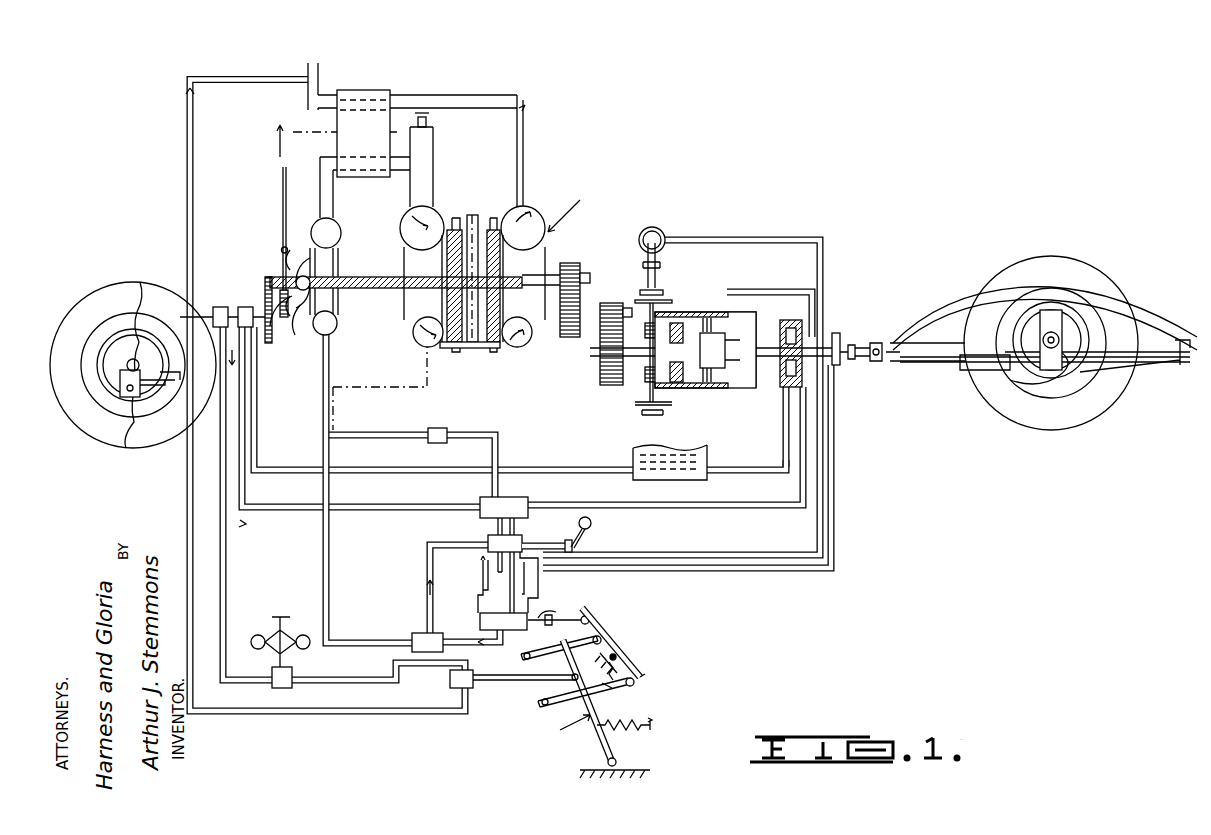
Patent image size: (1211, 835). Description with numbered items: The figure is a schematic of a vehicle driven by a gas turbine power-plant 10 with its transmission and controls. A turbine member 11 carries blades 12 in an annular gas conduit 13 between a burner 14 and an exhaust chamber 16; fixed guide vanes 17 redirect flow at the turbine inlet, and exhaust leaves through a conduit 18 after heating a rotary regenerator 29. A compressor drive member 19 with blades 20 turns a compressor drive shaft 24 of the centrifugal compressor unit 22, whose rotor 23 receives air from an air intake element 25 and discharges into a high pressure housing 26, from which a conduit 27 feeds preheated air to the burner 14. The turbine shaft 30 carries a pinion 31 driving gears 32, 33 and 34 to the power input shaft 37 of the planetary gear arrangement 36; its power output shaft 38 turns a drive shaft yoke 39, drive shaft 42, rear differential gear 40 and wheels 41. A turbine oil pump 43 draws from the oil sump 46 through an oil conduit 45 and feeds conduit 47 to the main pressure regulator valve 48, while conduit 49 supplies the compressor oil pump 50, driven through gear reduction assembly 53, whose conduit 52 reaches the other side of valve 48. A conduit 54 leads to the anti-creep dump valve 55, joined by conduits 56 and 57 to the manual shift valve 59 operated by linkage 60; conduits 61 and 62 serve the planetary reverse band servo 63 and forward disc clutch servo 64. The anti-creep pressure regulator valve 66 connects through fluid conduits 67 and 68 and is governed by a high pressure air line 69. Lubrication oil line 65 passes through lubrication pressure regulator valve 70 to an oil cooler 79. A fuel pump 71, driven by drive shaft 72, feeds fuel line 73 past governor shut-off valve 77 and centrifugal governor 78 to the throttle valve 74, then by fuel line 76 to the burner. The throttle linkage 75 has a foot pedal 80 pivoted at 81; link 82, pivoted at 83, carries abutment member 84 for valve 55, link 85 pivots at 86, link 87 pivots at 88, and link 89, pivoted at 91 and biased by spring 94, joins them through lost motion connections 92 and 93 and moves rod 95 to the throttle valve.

The gas turbine power-plant 10 is at (574, 208).
The turbine member 11 is at (470, 350).
The blades 12 is at (505, 348).
The annular gas conduit 13 is at (474, 214).
The burner 14 is at (410, 190).
The exhaust chamber 16 is at (530, 208).
The guide vanes 17 is at (454, 215).
The conduit 18 is at (320, 72).
The compressor drive member 19 is at (414, 326).
The blades 20 is at (432, 365).
The centrifugal compressor unit 22 is at (350, 314).
The rotor 23 is at (318, 278).
The compressor drive shaft 24 is at (370, 290).
The air intake element 25 is at (280, 262).
The high pressure housing 26 is at (341, 230).
The conduit 27 is at (320, 190).
The rotary regenerator 29 is at (372, 115).
The turbine shaft 30 is at (572, 262).
The pinion 31 is at (587, 272).
The gear 32 is at (645, 328).
The gear 33 is at (646, 300).
The gear 34 is at (611, 354).
The planetary gear arrangement 36 is at (716, 304).
The power input shaft 37 is at (627, 380).
The power output shaft 38 is at (760, 330).
The drive shaft yoke 39 is at (874, 342).
The rear differential gear 40 is at (1075, 330).
The wheels 41 is at (1085, 268).
The drive shaft 42 is at (905, 342).
The turbine oil pump 43 is at (806, 368).
The oil conduit 45 is at (780, 422).
The oil sump 46 is at (695, 482).
The conduit 47 is at (698, 510).
The main pressure regulator valve 48 is at (532, 500).
The conduit 49 is at (590, 454).
The compressor oil pump 50 is at (265, 285).
The conduit 52 is at (262, 518).
The gear reduction assembly 53 is at (266, 276).
The conduit 54 is at (538, 520).
The anti-creep dump valve 55 is at (480, 622).
The conduit 56 is at (478, 585).
The conduit 57 is at (508, 590).
The manual shift valve 59 is at (486, 538).
The linkage 60 is at (583, 549).
The conduit 61 is at (715, 570).
The conduit 62 is at (728, 552).
The planetary reverse band servo 63 is at (666, 243).
The planetary forward disc clutch servo 64 is at (720, 392).
The lubrication oil line 65 is at (398, 410).
The anti-creep pressure regulator valve 66 is at (410, 634).
The fluid conduit 67 is at (426, 574).
The fluid conduit 68 is at (470, 650).
The high pressure air line 69 is at (333, 540).
The lubrication pressure regulator valve 70 is at (458, 428).
The fuel pump 71 is at (150, 312).
The drive shaft 72 is at (224, 306).
The fuel line 73 is at (232, 570).
The throttle valve 74 is at (450, 680).
The throttle linkage 75 is at (560, 730).
The fuel line 76 is at (352, 716).
The governor shut-off valve 77 is at (292, 678).
The centrifugal governor 78 is at (285, 623).
The oil cooler 79 is at (296, 325).
The foot pedal 80 is at (612, 652).
The pivot 81 is at (618, 665).
The link 82 is at (572, 619).
The pivot 83 is at (587, 615).
The abutment member 84 is at (553, 596).
The link 85 is at (610, 695).
The pivot 86 is at (636, 684).
The link 87 is at (604, 624).
The pivot 88 is at (603, 640).
The link 89 is at (587, 740).
The pivot 91 is at (618, 764).
The lost motion pin and slot connection 92 is at (560, 698).
The lost motion pin and slot connection 93 is at (530, 655).
The spring 94 is at (655, 722).
The rod 95 is at (478, 686).